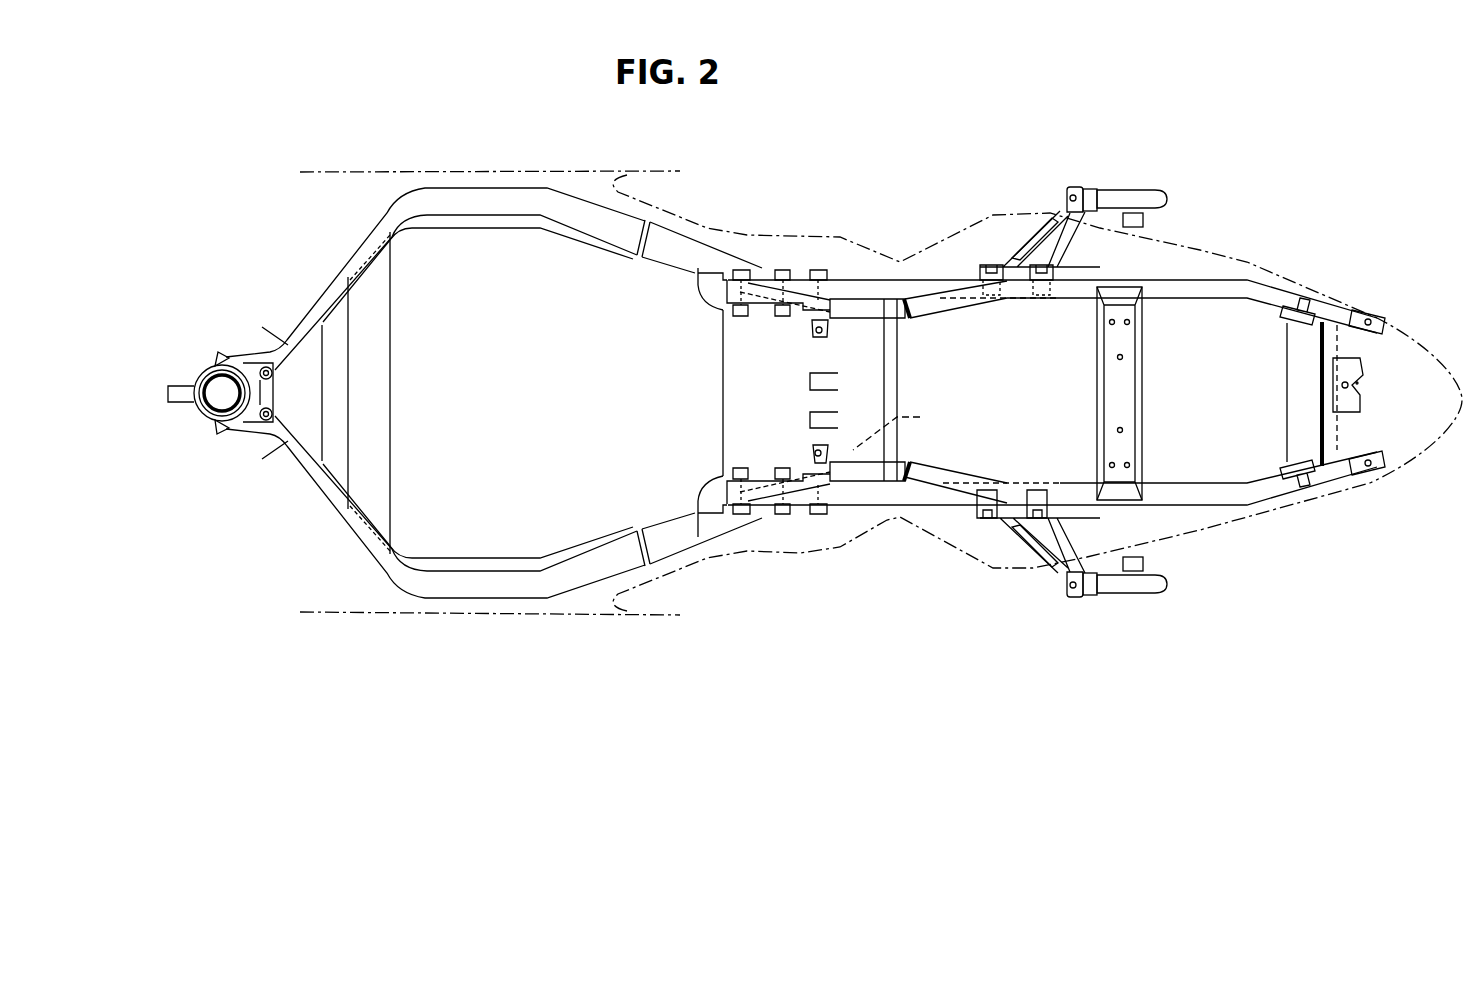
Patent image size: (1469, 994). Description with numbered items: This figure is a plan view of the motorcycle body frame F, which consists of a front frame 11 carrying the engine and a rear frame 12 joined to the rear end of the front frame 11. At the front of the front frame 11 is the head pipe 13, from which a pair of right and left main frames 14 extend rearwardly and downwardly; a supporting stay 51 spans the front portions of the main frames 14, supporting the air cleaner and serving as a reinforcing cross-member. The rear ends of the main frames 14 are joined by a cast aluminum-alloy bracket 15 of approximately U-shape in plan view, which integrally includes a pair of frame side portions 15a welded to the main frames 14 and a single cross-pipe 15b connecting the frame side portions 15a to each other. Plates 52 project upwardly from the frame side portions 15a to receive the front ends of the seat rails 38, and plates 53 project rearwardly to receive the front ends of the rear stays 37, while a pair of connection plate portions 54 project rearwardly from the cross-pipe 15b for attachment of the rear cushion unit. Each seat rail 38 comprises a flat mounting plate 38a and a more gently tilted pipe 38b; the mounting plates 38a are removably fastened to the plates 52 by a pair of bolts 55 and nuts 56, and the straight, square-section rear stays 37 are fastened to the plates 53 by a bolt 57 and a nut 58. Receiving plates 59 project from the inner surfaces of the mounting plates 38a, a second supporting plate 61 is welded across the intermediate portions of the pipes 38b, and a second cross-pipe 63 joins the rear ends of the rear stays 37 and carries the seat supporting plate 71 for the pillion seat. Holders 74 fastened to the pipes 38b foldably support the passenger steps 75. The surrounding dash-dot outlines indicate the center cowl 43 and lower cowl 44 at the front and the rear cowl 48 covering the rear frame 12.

The body frame F is at (890, 163).
The front frame 11 is at (746, 254).
The rear frame 12 is at (911, 275).
The head pipe 13 is at (213, 358).
The main frames 14 is at (441, 208).
The bracket 15 is at (647, 402).
The frame side portions 15a is at (697, 267).
The cross-pipe 15b is at (730, 383).
The rear stays 37 is at (940, 280).
The seat rails 38 is at (976, 472).
The mounting plate 38a is at (977, 613).
The pipe 38b is at (1067, 293).
The center cowl 43 is at (453, 613).
The lower cowl 44 is at (815, 560).
The rear cowl 48 is at (1230, 255).
The supporting stay 51 is at (378, 333).
The plates 52 is at (750, 298).
The plates 53 is at (808, 272).
The connection plate portions 54 is at (835, 378).
The bolts 55 is at (755, 514).
The nuts 56 is at (767, 468).
The bolt 57 is at (867, 470).
The nut 58 is at (904, 426).
The receiving plates 59 is at (825, 335).
The second supporting plate 61 is at (1130, 407).
The second cross-pipe 63 is at (1332, 435).
The seat supporting plate 71 is at (1352, 372).
The holders 74 is at (1060, 232).
The steps 75 is at (1118, 195).